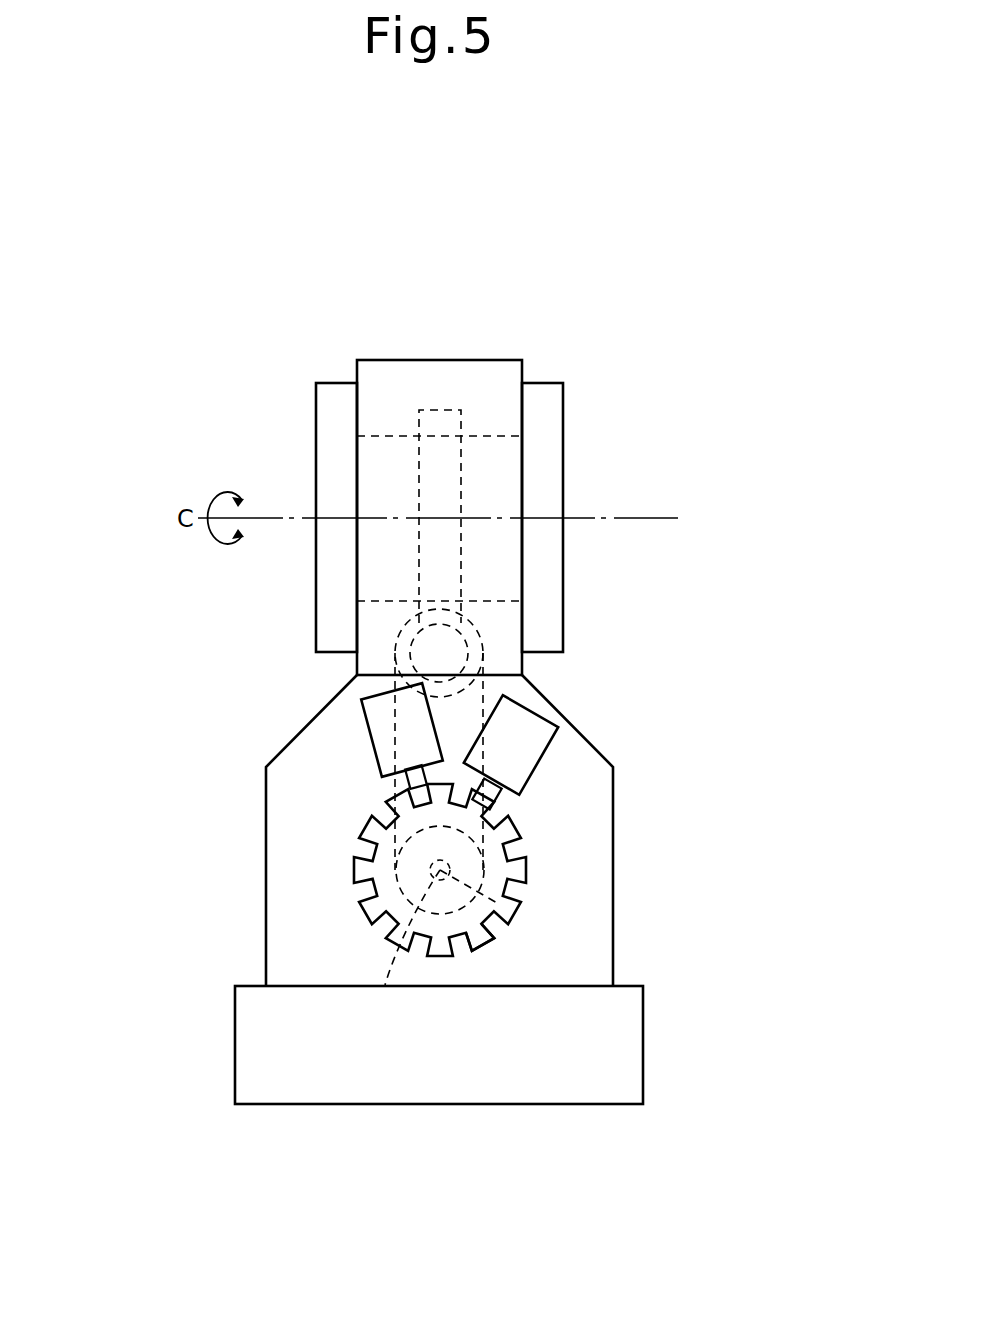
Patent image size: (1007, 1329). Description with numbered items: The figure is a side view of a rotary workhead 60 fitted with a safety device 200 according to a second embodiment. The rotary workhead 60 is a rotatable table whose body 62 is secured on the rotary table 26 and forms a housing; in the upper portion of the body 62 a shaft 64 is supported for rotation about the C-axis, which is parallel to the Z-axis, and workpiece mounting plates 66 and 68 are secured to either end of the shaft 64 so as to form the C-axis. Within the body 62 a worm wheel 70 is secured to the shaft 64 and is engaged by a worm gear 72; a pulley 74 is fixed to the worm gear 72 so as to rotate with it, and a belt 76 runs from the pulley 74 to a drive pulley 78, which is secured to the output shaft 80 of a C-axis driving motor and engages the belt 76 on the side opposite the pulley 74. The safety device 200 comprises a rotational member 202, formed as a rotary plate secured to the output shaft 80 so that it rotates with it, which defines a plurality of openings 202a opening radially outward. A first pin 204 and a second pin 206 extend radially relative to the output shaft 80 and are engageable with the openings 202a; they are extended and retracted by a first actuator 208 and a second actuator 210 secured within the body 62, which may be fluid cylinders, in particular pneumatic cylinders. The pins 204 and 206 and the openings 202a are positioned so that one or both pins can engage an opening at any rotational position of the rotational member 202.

The rotary table 26 is at (253, 1039).
The rotary workhead 60 is at (200, 293).
The body 62 is at (297, 829).
The shaft 64 is at (498, 448).
The workpiece mounting plate 66 is at (548, 412).
The workpiece mounting plate 68 is at (332, 413).
The worm wheel 70 is at (440, 427).
The worm gear 72 is at (477, 630).
The pulley 74 is at (410, 632).
The belt 76 is at (483, 680).
The drive pulley 78 is at (385, 985).
The output shaft 80 is at (497, 903).
The safety device 200 is at (552, 868).
The rotational member 202 is at (385, 866).
The openings 202a is at (477, 940).
The first pin 204 is at (513, 805).
The second pin 206 is at (398, 787).
The first actuator 208 is at (518, 743).
The second actuator 210 is at (372, 712).